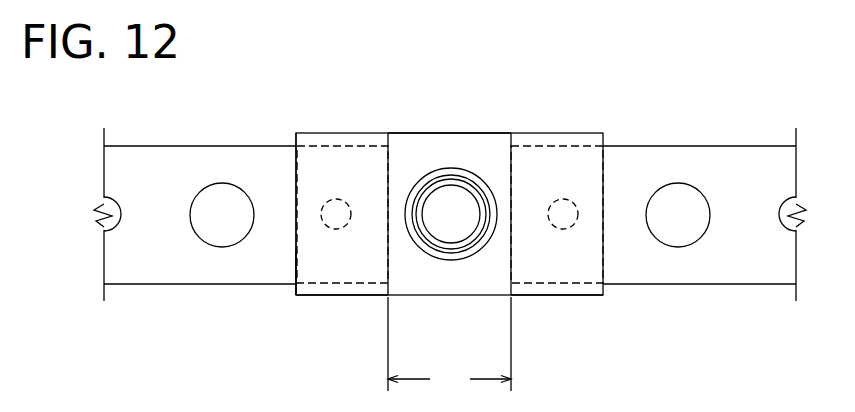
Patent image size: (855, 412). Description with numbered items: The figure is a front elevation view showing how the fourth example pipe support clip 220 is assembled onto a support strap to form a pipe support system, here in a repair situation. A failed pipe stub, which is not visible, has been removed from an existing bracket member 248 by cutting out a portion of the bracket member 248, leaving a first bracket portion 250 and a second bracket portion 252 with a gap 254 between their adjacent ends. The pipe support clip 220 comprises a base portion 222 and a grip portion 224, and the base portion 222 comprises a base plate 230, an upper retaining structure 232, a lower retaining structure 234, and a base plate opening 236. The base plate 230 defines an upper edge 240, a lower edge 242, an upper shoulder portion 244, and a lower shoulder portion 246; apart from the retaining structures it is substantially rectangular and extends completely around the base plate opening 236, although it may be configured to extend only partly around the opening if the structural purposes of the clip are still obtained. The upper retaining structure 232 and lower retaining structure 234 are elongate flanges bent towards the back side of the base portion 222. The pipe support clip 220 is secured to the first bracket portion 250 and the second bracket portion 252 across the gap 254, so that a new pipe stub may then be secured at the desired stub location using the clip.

The pipe support clip 220 is at (613, 116).
The base portion 222 is at (336, 131).
The grip portion 224 is at (440, 265).
The base plate 230 is at (456, 147).
The upper retaining structure 232 is at (404, 131).
The lower retaining structure 234 is at (350, 298).
The base plate opening 236 is at (467, 226).
The upper edge 240 is at (523, 133).
The lower edge 242 is at (563, 295).
The upper shoulder portion 244 is at (297, 152).
The lower shoulder portion 246 is at (297, 276).
The bracket member 248 is at (140, 145).
The first bracket portion 250 is at (148, 266).
The second bracket portion 252 is at (737, 269).
The gap 254 is at (449, 345).